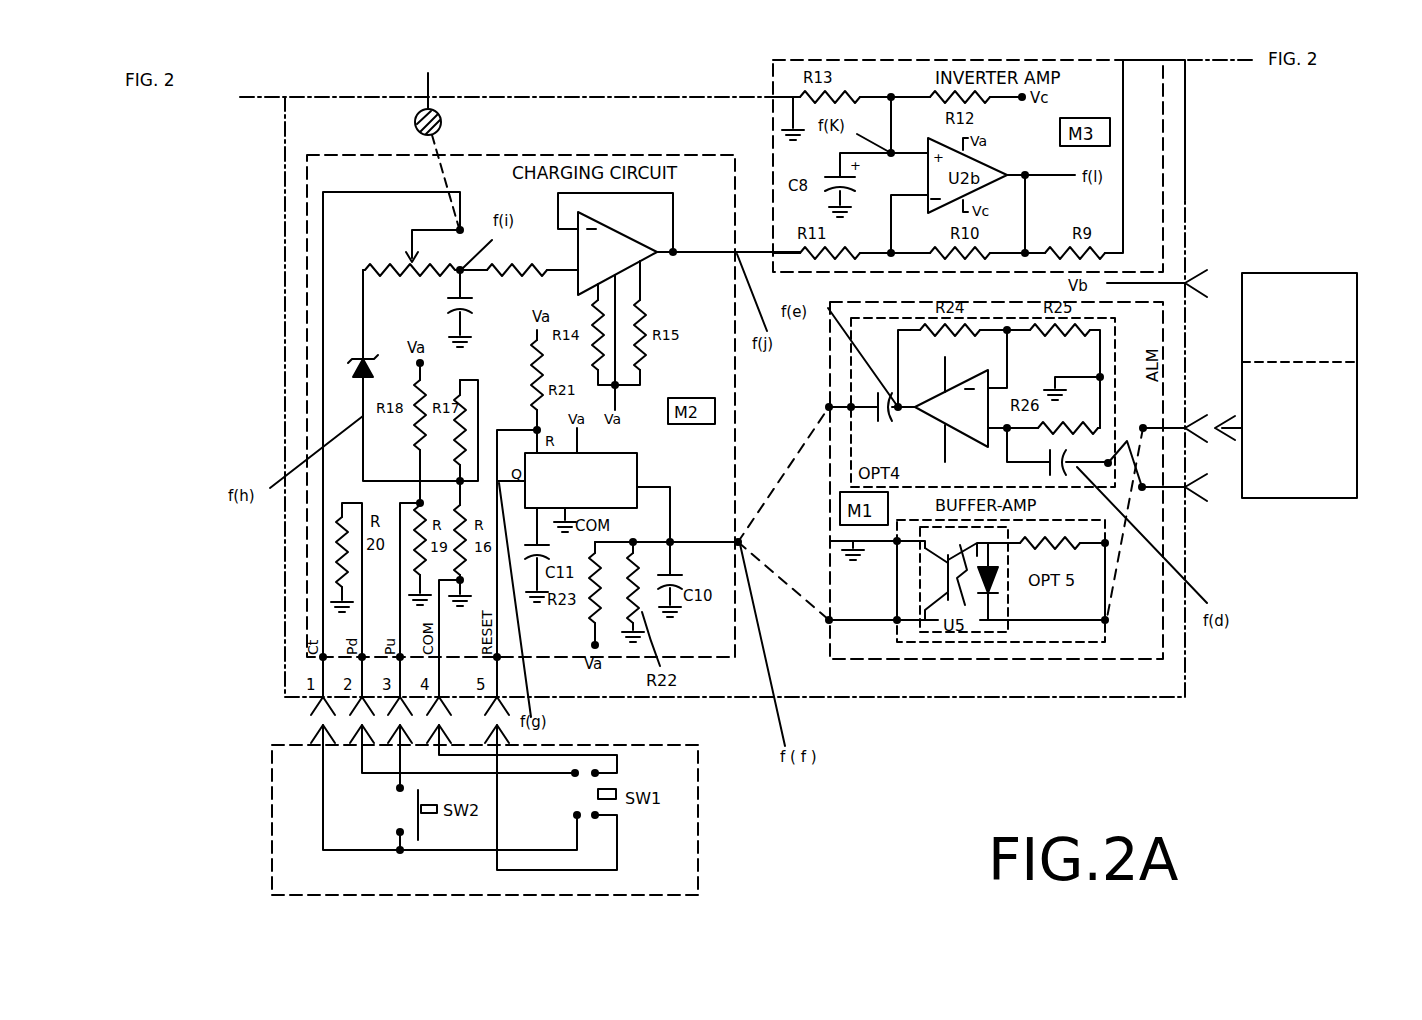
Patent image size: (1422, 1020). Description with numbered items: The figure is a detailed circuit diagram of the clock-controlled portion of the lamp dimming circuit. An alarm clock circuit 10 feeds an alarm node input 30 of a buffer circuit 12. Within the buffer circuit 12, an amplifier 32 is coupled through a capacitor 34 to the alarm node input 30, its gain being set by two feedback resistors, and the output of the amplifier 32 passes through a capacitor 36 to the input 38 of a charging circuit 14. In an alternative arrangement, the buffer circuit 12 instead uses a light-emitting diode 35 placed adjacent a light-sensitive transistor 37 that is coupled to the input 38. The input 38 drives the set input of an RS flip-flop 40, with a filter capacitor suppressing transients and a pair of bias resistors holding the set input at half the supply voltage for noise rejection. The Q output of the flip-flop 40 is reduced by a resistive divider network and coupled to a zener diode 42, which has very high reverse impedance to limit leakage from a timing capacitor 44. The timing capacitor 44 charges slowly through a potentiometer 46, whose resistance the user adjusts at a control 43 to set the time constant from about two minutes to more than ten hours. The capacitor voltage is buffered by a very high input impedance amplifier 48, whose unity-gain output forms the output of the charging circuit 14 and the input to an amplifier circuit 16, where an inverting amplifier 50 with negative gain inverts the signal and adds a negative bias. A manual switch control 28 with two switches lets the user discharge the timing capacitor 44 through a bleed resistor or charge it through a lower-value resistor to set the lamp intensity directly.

The alarm clock circuit 10 is at (1343, 297).
The buffer circuit 12 is at (1147, 645).
The charging circuit 14 is at (300, 328).
The amplifier circuit 16 is at (1172, 173).
The manual switch control 28 is at (702, 838).
The alarm node input 30 is at (1146, 427).
The amplifier 32 is at (938, 400).
The capacitor 34 is at (1050, 468).
The light-emitting diode 35 is at (992, 590).
The capacitor 36 is at (876, 423).
The light-sensitive transistor 37 is at (944, 588).
The input 38 is at (742, 541).
The RS flip-flop 40 is at (640, 470).
The zener diode 42 is at (355, 373).
The control 43 is at (437, 139).
The timing capacitor 44 is at (478, 311).
The potentiometer 46 is at (420, 277).
The amplifier 48 is at (638, 263).
The inverting amplifier 50 is at (985, 172).